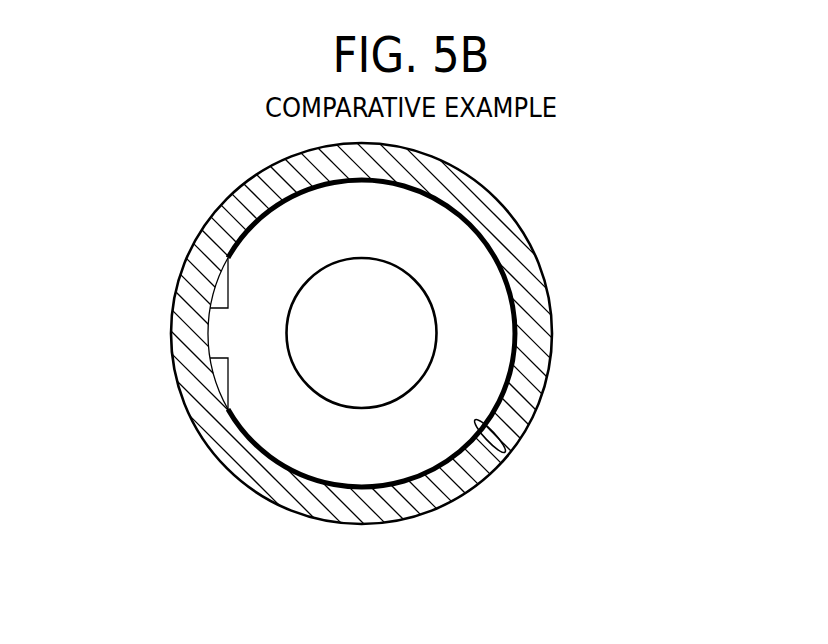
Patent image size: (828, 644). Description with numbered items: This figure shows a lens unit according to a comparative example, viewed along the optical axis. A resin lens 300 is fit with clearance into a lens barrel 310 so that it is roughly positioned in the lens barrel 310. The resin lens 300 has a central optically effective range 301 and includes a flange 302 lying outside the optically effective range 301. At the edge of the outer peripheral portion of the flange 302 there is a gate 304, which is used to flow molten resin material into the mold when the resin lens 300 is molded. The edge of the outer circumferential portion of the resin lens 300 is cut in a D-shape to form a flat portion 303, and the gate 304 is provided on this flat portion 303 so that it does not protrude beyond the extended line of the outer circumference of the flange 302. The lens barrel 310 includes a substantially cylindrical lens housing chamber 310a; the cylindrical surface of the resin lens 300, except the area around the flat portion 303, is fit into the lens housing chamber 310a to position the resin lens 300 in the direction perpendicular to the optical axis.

The resin lens 300 is at (372, 368).
The optically effective range 301 is at (400, 292).
The flange 302 is at (490, 317).
The flat portion 303 is at (223, 383).
The gate 304 is at (217, 332).
The lens barrel 310 is at (527, 395).
The lens housing chamber 310a is at (505, 452).